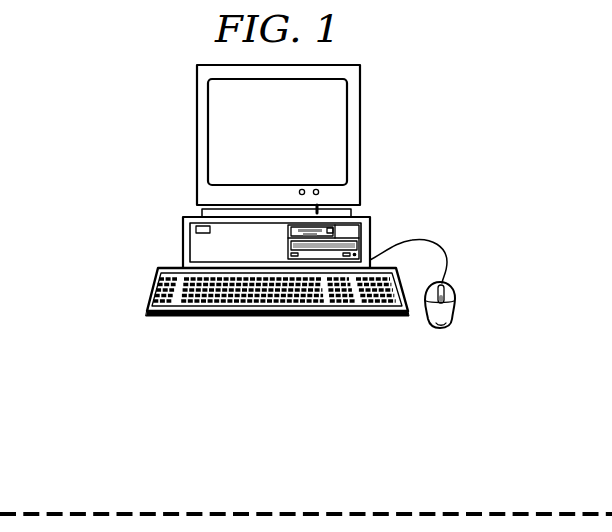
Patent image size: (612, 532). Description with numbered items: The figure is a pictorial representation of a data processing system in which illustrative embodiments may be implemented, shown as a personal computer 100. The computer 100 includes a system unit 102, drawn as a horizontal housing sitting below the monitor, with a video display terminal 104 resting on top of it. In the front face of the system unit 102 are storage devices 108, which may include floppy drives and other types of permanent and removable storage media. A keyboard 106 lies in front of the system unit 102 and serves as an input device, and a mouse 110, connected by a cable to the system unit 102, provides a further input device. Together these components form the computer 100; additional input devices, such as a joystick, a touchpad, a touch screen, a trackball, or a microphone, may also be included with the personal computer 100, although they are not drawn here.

The computer 100 is at (131, 108).
The system unit 102 is at (183, 243).
The video display terminal 104 is at (361, 135).
The keyboard 106 is at (253, 317).
The storage devices 108 is at (343, 230).
The mouse 110 is at (454, 312).